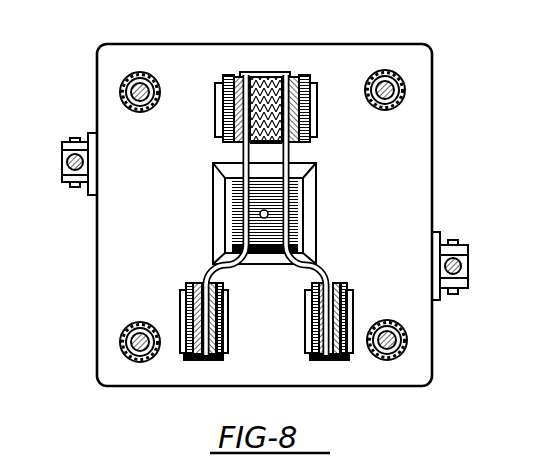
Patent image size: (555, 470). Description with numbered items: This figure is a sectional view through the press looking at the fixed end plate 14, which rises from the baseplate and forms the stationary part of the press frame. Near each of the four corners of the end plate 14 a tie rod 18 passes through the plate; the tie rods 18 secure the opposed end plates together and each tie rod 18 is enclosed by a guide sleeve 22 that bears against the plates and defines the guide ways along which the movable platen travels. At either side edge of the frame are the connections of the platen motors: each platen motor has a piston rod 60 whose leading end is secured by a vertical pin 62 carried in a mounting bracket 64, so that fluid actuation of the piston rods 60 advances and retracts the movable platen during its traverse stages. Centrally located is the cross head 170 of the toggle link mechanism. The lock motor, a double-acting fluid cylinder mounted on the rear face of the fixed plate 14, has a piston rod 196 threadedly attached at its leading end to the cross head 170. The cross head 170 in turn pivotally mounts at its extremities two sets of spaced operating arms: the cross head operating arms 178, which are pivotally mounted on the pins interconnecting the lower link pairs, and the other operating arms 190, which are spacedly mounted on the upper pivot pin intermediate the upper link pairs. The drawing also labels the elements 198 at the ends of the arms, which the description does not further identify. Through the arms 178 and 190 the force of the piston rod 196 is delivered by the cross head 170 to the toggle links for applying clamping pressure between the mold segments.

The end plate 14 is at (420, 167).
The tie rod 18 is at (398, 79).
The guide sleeve 22 is at (400, 103).
The piston rod 60 is at (72, 178).
The vertical pin 62 is at (455, 240).
The mounting bracket 64 is at (455, 248).
The cross head 170 is at (262, 196).
The cross head operating arm 178 is at (237, 243).
The operating arm 190 is at (244, 152).
The piston rod 196 is at (268, 213).
The rollers 198 is at (268, 74).